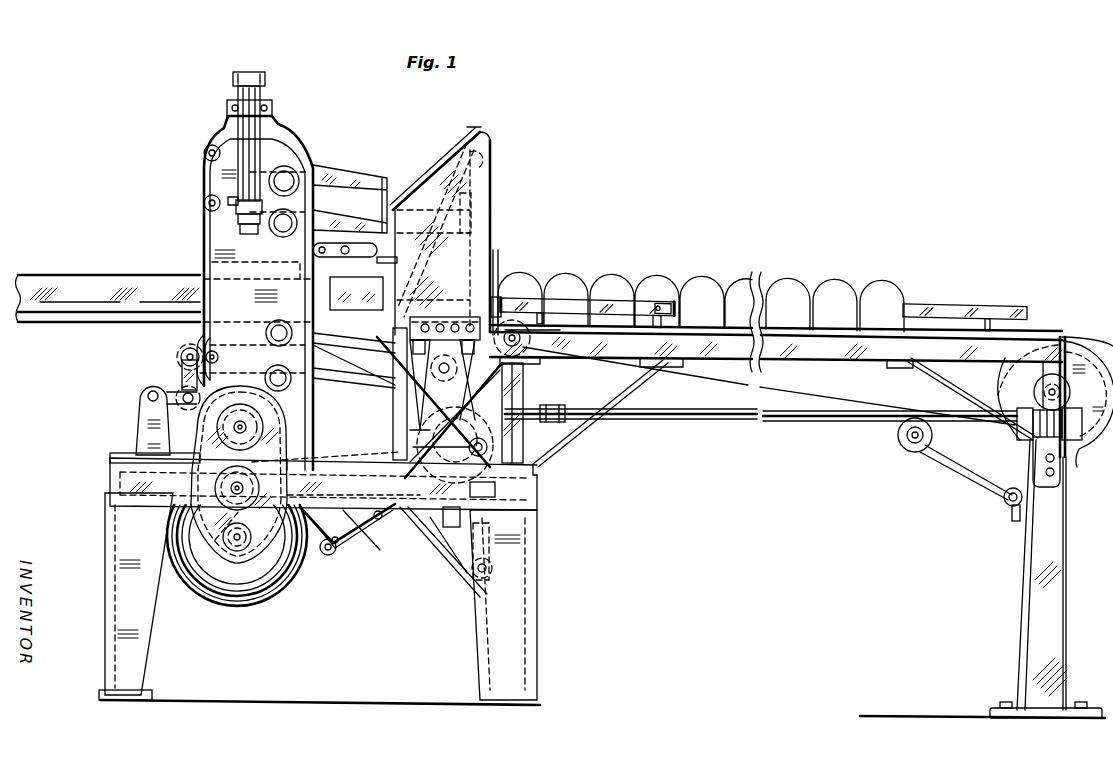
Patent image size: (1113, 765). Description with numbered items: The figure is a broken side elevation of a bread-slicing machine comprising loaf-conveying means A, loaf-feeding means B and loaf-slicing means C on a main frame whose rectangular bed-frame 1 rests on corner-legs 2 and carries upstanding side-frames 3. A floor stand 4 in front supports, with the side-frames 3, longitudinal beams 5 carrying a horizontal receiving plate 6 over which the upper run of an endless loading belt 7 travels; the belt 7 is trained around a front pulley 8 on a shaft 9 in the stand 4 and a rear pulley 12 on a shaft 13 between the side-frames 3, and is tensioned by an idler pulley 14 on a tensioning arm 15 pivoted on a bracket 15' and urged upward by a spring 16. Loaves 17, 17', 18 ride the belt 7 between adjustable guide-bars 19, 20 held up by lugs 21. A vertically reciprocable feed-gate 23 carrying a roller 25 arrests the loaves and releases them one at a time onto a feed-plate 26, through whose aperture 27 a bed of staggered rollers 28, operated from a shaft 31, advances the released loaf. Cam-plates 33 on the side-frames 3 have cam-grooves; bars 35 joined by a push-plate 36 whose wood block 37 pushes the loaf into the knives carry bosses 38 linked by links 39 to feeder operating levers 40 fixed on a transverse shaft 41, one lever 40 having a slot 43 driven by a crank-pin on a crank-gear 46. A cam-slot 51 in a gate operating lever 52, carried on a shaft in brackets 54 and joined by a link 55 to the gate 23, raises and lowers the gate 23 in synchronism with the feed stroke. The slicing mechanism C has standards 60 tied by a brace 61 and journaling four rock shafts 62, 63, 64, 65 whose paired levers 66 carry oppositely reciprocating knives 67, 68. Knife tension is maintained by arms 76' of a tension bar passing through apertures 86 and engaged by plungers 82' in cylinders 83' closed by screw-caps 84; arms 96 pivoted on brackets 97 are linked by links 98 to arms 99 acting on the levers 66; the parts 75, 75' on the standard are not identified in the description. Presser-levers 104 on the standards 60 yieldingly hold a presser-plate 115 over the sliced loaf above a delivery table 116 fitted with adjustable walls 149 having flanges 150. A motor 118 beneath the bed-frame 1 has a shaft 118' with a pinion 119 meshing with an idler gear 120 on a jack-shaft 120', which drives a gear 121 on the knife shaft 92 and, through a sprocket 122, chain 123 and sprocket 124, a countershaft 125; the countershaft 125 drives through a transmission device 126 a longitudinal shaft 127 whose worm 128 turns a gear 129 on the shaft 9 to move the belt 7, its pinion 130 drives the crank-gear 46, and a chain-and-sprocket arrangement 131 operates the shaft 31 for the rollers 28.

The bed-frame 1 is at (540, 484).
The corner-legs 2 is at (144, 660).
The side-frames 3 is at (524, 372).
The floor stand 4 is at (1035, 597).
The longitudinal beams 5 is at (832, 360).
The receiving plate 6 is at (1082, 344).
The loading belt 7 is at (938, 310).
The front pulley 8 is at (990, 383).
The shaft 9 is at (950, 388).
The pulley 12 is at (515, 328).
The shaft 13 is at (543, 330).
The idler pulley 14 is at (903, 445).
The tensioning arm 15 is at (966, 472).
The bracket 15' is at (1004, 530).
The spring 16 is at (1004, 502).
The loaf of bread 17 is at (587, 280).
The loaf of bread 17' is at (591, 261).
The loaf of bread 18 is at (622, 282).
The guide-bar 19 is at (662, 300).
The guide-bar 20 is at (915, 308).
The lugs 21 is at (673, 313).
The feed-gate 23 is at (500, 297).
The roller 25 is at (495, 290).
The feed-plate 26 is at (444, 306).
The transverse aperture 27 is at (442, 347).
The rollers 28 is at (445, 316).
The shaft 31 is at (434, 394).
The cam-plates 33 is at (492, 200).
The bars 35 is at (476, 226).
The push-plate 36 is at (480, 167).
The wood block 37 is at (449, 213).
The bosses 38 is at (554, 342).
The links 39 is at (356, 295).
The feeder operating lever 40 is at (450, 551).
The transverse shaft 41 is at (463, 580).
The longitudinal slot 43 is at (410, 523).
The crank-gear 46 is at (387, 522).
The cam-slot 51 is at (372, 548).
The gate operating lever 52 is at (340, 548).
The brackets 54 is at (315, 561).
The link 55 is at (488, 446).
The standards 60 is at (286, 140).
The brace 61 is at (275, 120).
The rock shaft 62 is at (290, 172).
The rock shaft 63 is at (272, 226).
The rock shaft 64 is at (279, 319).
The rock shaft 65 is at (290, 380).
The levers 66 is at (370, 173).
The knives 67 is at (432, 166).
The knife 68 is at (385, 263).
The bolt 75 is at (192, 151).
The bolt 75' is at (193, 193).
The arms 76' is at (215, 224).
The plunger 82' is at (215, 207).
The cylinder 83' is at (224, 143).
The screw-cap 84 is at (233, 76).
The aperture 86 is at (240, 230).
The shaft 92 is at (222, 426).
The arms 96 is at (160, 388).
The brackets 97 is at (148, 412).
The links 98 is at (186, 360).
The arms 99 is at (188, 352).
The presser-levers 104 is at (256, 268).
The presser-plate 115 is at (318, 257).
The delivery table 116 is at (165, 312).
The motor 118 is at (237, 568).
The motor shaft 118' is at (251, 581).
The pinion 119 is at (205, 570).
The idler gear 120 is at (301, 598).
The jack-shaft 120' is at (162, 518).
The gear 121 is at (148, 438).
The sprocket 122 is at (215, 520).
The chain 123 is at (356, 428).
The sprocket 124 is at (536, 462).
The countershaft 125 is at (486, 493).
The transmission device 126 is at (490, 430).
The longitudinal shaft 127 is at (720, 426).
The worm 128 is at (1060, 447).
The gear 129 is at (1034, 388).
The pinion 130 is at (538, 504).
The chain-and-sprocket arrangement 131 is at (392, 396).
The longitudinal walls 149 is at (111, 274).
The flange 150 is at (100, 310).
The loaf-conveying means A is at (1027, 332).
The loaf-feeding means B is at (478, 128).
The loaf-slicing means C is at (332, 152).